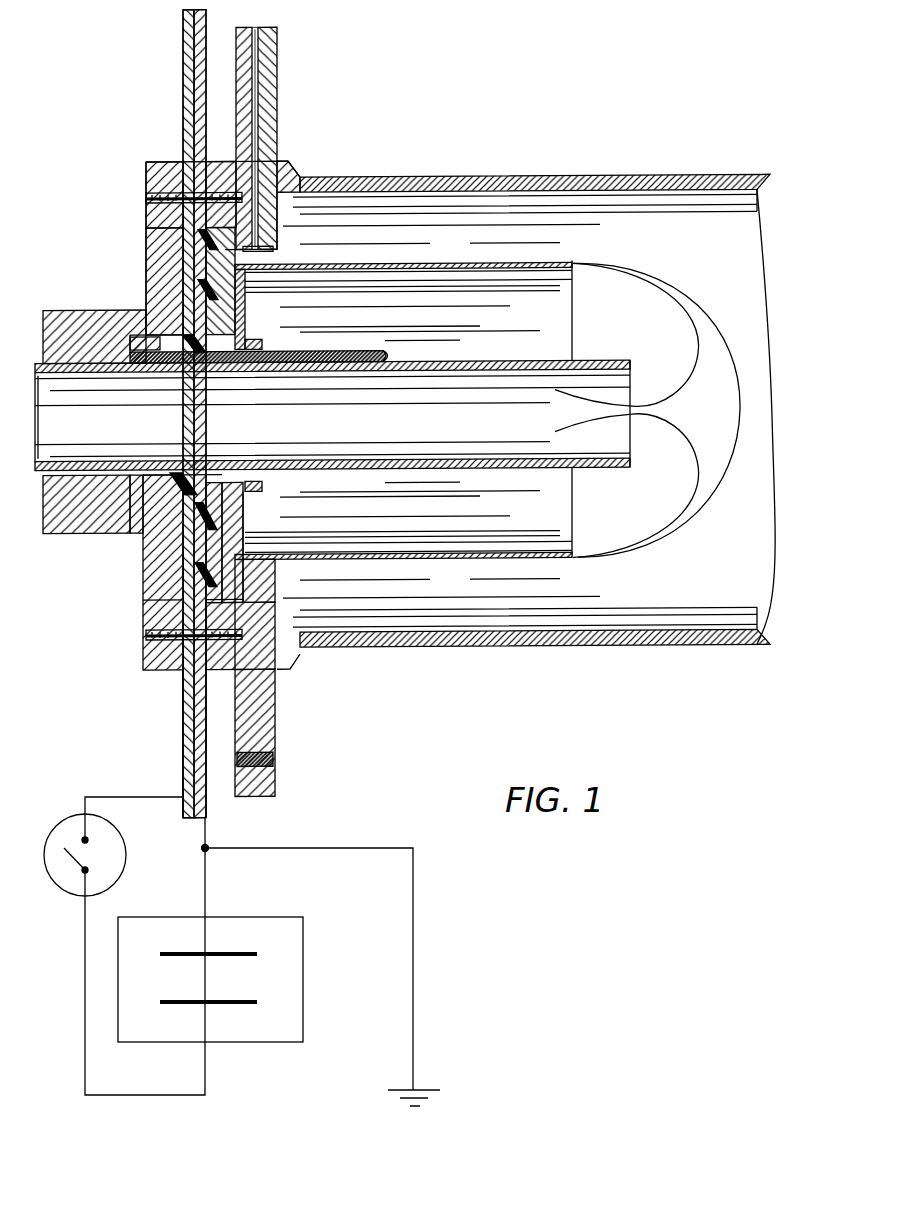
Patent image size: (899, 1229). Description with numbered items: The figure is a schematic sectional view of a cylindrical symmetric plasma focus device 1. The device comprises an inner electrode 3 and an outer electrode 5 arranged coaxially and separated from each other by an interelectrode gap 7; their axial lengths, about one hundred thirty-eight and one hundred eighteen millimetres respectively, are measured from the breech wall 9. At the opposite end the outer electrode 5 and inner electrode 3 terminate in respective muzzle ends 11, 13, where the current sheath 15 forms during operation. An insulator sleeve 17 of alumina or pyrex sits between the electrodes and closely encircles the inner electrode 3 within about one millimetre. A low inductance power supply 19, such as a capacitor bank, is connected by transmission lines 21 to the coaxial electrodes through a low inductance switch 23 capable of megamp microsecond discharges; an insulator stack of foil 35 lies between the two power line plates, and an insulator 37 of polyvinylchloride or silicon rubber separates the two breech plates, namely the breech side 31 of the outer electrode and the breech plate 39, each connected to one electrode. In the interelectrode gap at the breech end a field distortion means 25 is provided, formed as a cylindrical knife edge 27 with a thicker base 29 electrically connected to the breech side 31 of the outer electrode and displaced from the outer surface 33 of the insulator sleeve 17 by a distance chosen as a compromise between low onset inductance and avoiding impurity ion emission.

The plasma focus device 1 is at (468, 144).
The inner electrode 3 is at (620, 358).
The outer electrode 5 is at (533, 263).
The interelectrode gap 7 is at (437, 297).
The breech wall 9 is at (293, 267).
The muzzle end of outer electrode 11 is at (572, 290).
The muzzle end of inner electrode 13 is at (632, 376).
The current sheath 15 is at (728, 358).
The insulator sleeve 17 is at (388, 350).
The power supply 19 is at (118, 1015).
The transmission lines 21 is at (183, 790).
The switch 23 is at (120, 875).
The field distortion means 25 is at (248, 350).
The cylindrical knife edge 27 is at (290, 331).
The base 29 is at (217, 330).
The breech side of outer electrode 31 is at (163, 260).
The outer surface of insulator sleeve 33 is at (255, 343).
The insulator stack of foil 35 is at (192, 733).
The insulator 37 is at (212, 567).
The breech plate 39 is at (70, 523).